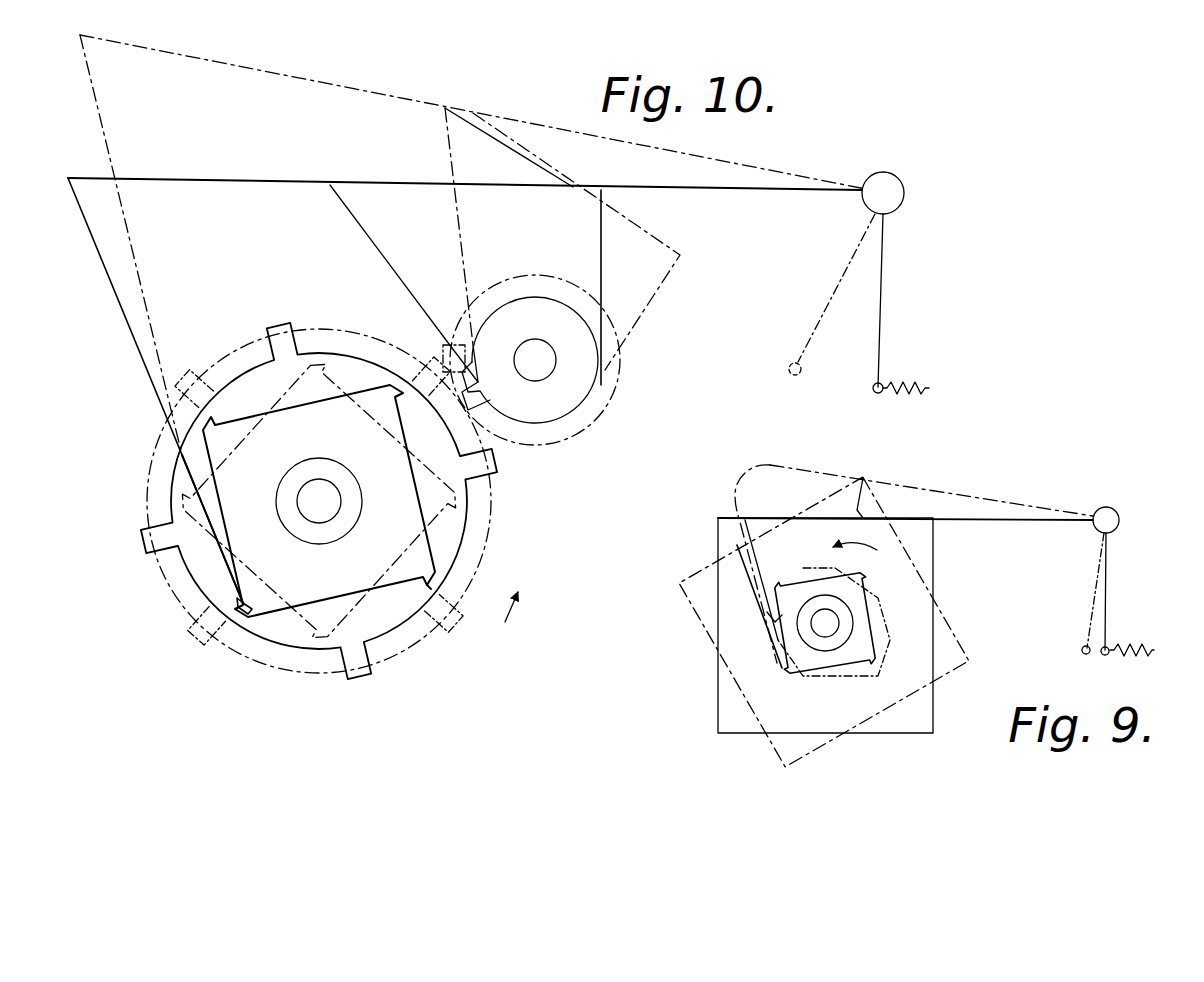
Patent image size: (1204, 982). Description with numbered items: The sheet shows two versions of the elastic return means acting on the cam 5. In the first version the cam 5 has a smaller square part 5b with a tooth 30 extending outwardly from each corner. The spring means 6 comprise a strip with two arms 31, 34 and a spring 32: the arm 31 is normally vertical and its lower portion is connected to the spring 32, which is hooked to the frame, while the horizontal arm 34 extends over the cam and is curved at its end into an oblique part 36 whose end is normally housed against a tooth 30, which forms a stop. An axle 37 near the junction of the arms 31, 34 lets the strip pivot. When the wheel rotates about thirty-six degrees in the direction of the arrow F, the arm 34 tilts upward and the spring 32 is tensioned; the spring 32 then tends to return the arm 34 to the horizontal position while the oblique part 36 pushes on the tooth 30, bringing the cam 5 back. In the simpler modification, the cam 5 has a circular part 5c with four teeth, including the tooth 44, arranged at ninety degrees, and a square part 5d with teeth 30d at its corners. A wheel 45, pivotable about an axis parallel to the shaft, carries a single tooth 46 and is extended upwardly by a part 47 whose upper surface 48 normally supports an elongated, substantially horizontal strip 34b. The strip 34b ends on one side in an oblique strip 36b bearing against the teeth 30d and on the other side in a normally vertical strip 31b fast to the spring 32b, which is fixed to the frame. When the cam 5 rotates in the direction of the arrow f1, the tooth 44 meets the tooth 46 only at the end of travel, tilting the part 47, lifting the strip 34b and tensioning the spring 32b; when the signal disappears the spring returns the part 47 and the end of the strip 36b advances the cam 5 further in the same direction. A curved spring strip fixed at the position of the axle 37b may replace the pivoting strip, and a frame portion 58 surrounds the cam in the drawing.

In FIG. 10, the cam 5 is at (146, 508).
In FIG. 9, the part of the cam 5b is at (787, 663).
In FIG. 10, the part of the cam 5c is at (462, 527).
In FIG. 10, the part of the cam 5d is at (240, 610).
In FIG. 10, the spring means 6 is at (918, 384).
In FIG. 9, the spring means 6 is at (1040, 503).
In FIG. 9, the tooth 30 is at (767, 612).
In FIG. 10, the teeth 30d is at (428, 583).
In FIG. 9, the arm 31 is at (1108, 592).
In FIG. 10, the strip 31b is at (883, 310).
In FIG. 9, the spring 32 is at (1150, 650).
In FIG. 10, the spring 32b is at (907, 403).
In FIG. 9, the arm 34 is at (1005, 522).
In FIG. 10, the strip 34b is at (307, 183).
In FIG. 9, the oblique part 36 is at (777, 585).
In FIG. 10, the oblique strip 36b is at (138, 358).
In FIG. 9, the axle 37 is at (1118, 518).
In FIG. 10, the axle 37b is at (890, 194).
In FIG. 10, the tooth 44 is at (455, 395).
In FIG. 10, the wheel 45 is at (572, 377).
In FIG. 10, the tooth 46 is at (470, 403).
In FIG. 10, the part 47 is at (580, 243).
In FIG. 10, the upper surface 48 is at (398, 188).
In FIG. 9, the frame 58 is at (718, 518).
In FIG. 9, the arrow F is at (859, 559).
In FIG. 10, the arrow f1 is at (518, 616).